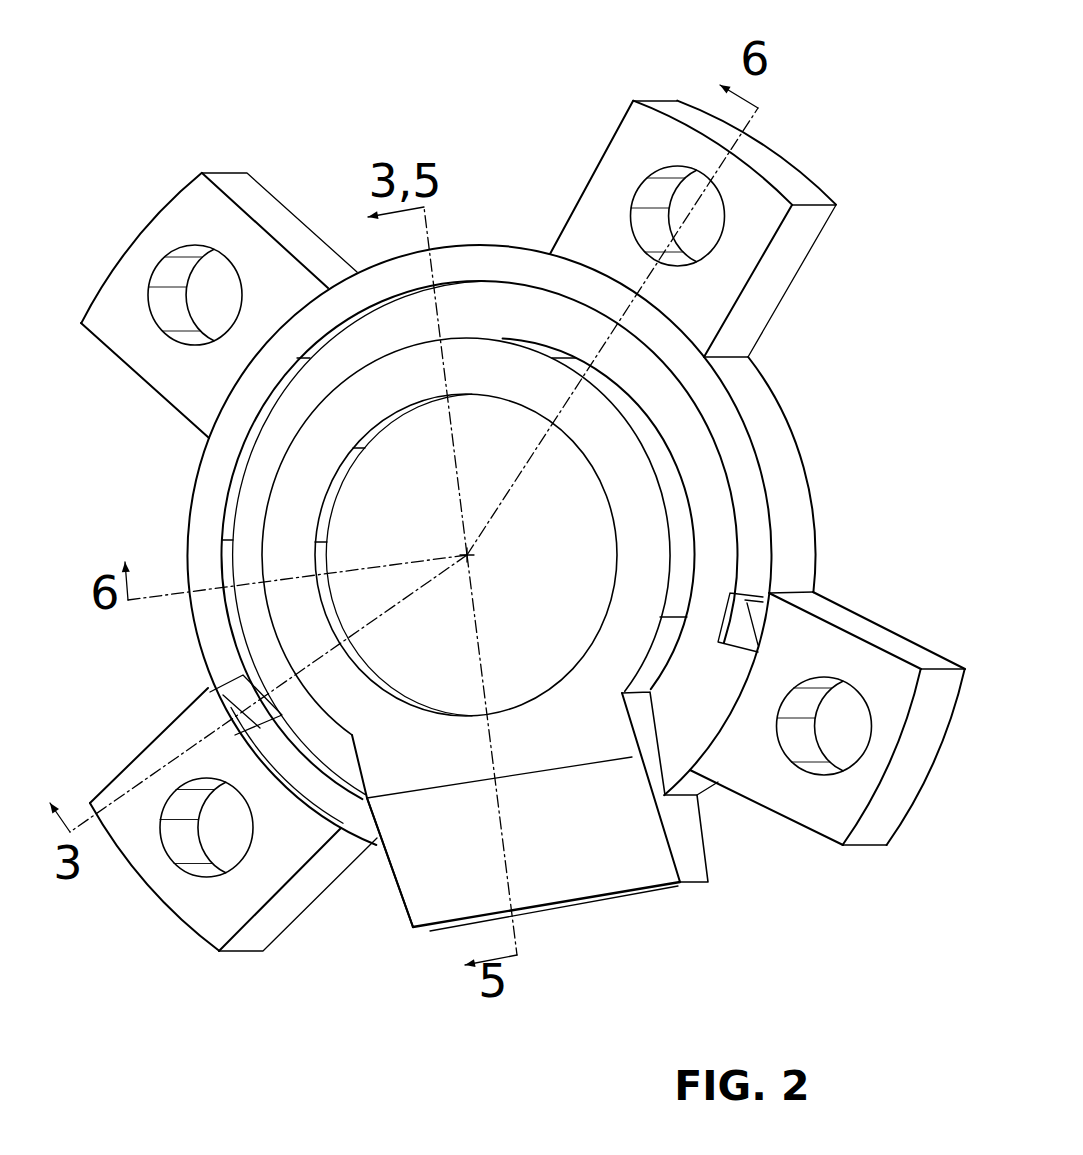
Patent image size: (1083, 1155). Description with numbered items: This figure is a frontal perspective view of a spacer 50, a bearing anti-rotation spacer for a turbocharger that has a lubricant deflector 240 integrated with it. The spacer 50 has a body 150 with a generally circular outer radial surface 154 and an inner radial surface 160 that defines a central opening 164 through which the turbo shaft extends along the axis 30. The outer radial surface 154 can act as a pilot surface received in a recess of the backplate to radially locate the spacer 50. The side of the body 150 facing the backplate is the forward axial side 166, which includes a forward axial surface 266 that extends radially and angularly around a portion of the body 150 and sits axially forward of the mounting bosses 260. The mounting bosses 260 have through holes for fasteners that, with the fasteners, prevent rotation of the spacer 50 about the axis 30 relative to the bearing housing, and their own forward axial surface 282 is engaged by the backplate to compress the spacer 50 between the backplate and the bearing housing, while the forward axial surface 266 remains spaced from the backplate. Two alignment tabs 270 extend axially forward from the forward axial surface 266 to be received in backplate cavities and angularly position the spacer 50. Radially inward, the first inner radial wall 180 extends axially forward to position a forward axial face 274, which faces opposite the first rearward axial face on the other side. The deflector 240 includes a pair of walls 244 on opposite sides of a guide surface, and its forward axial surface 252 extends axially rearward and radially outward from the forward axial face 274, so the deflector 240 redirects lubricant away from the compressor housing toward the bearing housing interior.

The axis 30 is at (470, 558).
The spacer 50 is at (505, 225).
The body 150 is at (755, 385).
The outer radial surface 154 is at (772, 430).
The inner radial surface 160 is at (612, 550).
The opening 164 is at (435, 670).
The forward axial side 166 is at (222, 660).
The first inner radial wall 180 is at (680, 497).
The deflector 240 is at (617, 853).
The pair of walls 244 is at (700, 832).
The forward axial surface of the deflector 252 is at (412, 888).
The mounting bosses 260 is at (170, 222).
The forward axial surface 266 is at (192, 510).
The alignment tabs 270 is at (740, 603).
The forward axial face 274 is at (327, 450).
The forward axial surface of the mounting bosses 282 is at (885, 693).